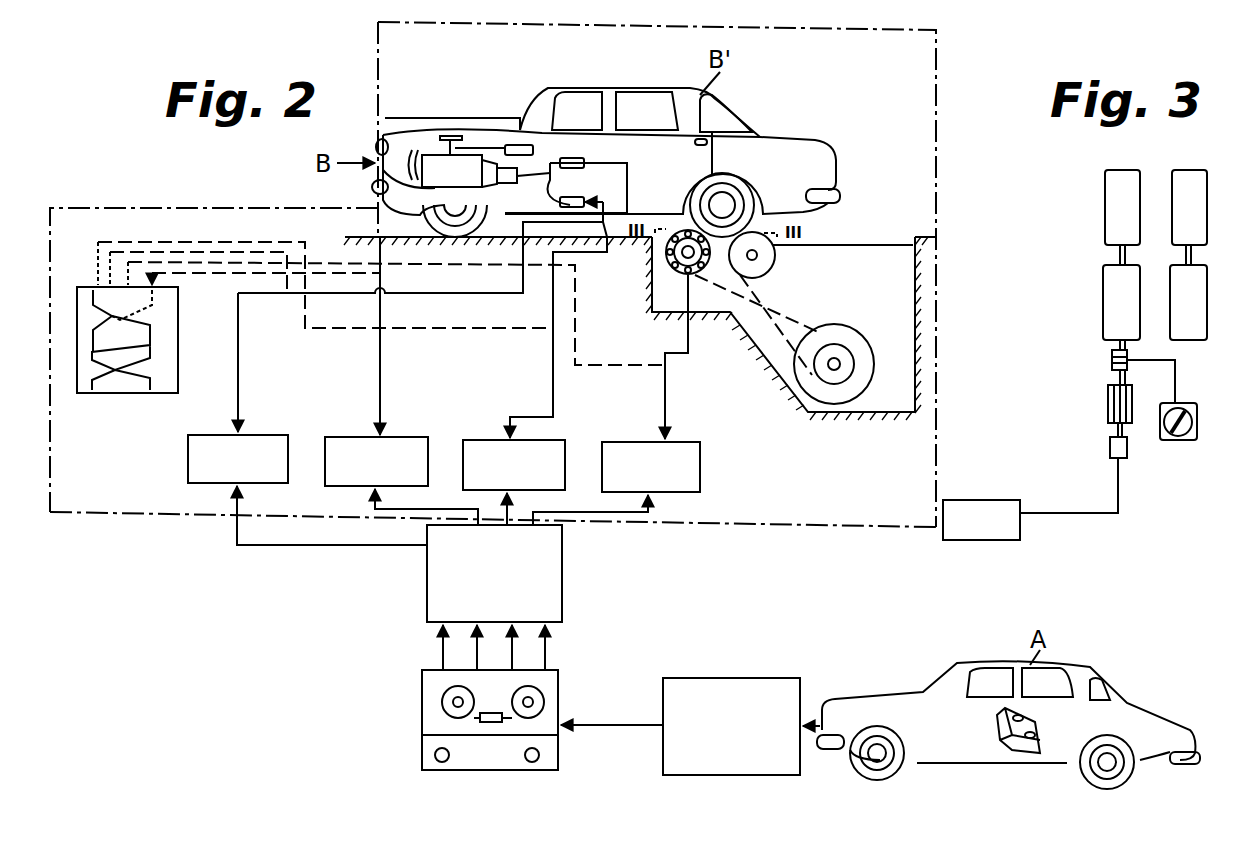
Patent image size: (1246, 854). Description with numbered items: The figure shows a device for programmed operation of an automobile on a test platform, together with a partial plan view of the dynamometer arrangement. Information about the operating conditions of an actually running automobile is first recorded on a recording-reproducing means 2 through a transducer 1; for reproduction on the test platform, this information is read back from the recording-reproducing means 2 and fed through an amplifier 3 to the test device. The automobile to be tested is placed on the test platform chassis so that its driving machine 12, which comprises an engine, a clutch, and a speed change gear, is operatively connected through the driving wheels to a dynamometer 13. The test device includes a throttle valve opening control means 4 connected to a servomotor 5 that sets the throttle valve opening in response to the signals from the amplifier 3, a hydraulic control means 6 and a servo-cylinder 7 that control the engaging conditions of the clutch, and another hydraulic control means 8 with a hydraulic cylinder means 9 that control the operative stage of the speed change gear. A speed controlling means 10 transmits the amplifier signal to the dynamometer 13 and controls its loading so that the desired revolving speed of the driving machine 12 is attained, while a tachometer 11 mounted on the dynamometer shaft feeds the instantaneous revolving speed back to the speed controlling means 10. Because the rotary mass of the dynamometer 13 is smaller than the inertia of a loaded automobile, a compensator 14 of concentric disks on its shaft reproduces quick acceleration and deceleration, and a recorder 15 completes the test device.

In FIG. 2, the transducer 1 is at (731, 726).
In FIG. 2, the recording-reproducing means 2 is at (560, 690).
In FIG. 2, the amplifier 3 is at (562, 575).
In FIG. 2, the throttle valve opening control means 4 is at (376, 461).
In FIG. 2, the servomotor 5 is at (519, 143).
In FIG. 2, the hydraulic control means 6 is at (514, 465).
In FIG. 2, the servo-cylinder 7 is at (578, 198).
In FIG. 2, the hydraulic control means 8 is at (238, 459).
In FIG. 2, the hydraulic cylinder means 9 is at (578, 156).
In FIG. 2, the speed controlling means 10 is at (651, 467).
In FIG. 3, the speed controlling means 10 is at (981, 520).
In FIG. 3, the tachometer 11 is at (1108, 447).
In FIG. 2, the driving machine 12 is at (430, 156).
In FIG. 2, the dynamometer 13 is at (652, 266).
In FIG. 3, the dynamometer 13 is at (1107, 400).
In FIG. 2, the compensator 14 is at (842, 332).
In FIG. 2, the recorder 15 is at (178, 320).